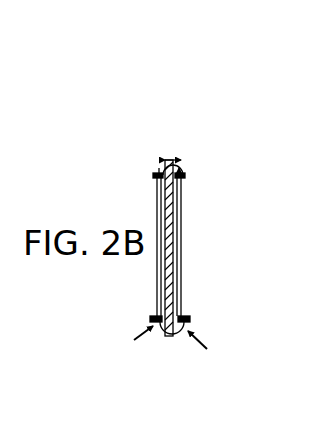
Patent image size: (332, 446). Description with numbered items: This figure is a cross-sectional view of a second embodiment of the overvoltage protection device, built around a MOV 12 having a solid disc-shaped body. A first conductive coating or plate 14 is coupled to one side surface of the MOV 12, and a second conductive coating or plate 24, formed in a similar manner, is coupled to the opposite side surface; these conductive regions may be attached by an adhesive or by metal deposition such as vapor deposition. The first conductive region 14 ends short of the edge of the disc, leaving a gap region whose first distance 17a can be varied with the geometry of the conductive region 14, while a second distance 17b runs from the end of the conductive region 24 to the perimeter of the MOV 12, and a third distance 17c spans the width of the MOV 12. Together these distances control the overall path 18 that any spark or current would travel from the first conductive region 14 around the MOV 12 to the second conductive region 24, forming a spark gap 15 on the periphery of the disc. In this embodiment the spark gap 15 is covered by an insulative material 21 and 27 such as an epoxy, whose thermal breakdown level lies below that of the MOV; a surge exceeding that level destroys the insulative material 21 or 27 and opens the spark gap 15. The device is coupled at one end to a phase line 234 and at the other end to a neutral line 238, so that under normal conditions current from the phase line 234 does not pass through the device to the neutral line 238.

The MOV 12 is at (172, 343).
The conductive coating or plate 14 is at (181, 226).
The spark gap 15 is at (184, 156).
The gap region / first distance 17a is at (193, 163).
The second distance 17b is at (160, 165).
The distance across the width of MOV 17c is at (167, 158).
The spark travel distance 18 is at (160, 335).
The insulative material 21 is at (181, 247).
The conductive coating or plate 24 is at (160, 200).
The insulative material 27 is at (160, 265).
The phase line 234 is at (190, 330).
The neutral line 238 is at (157, 331).